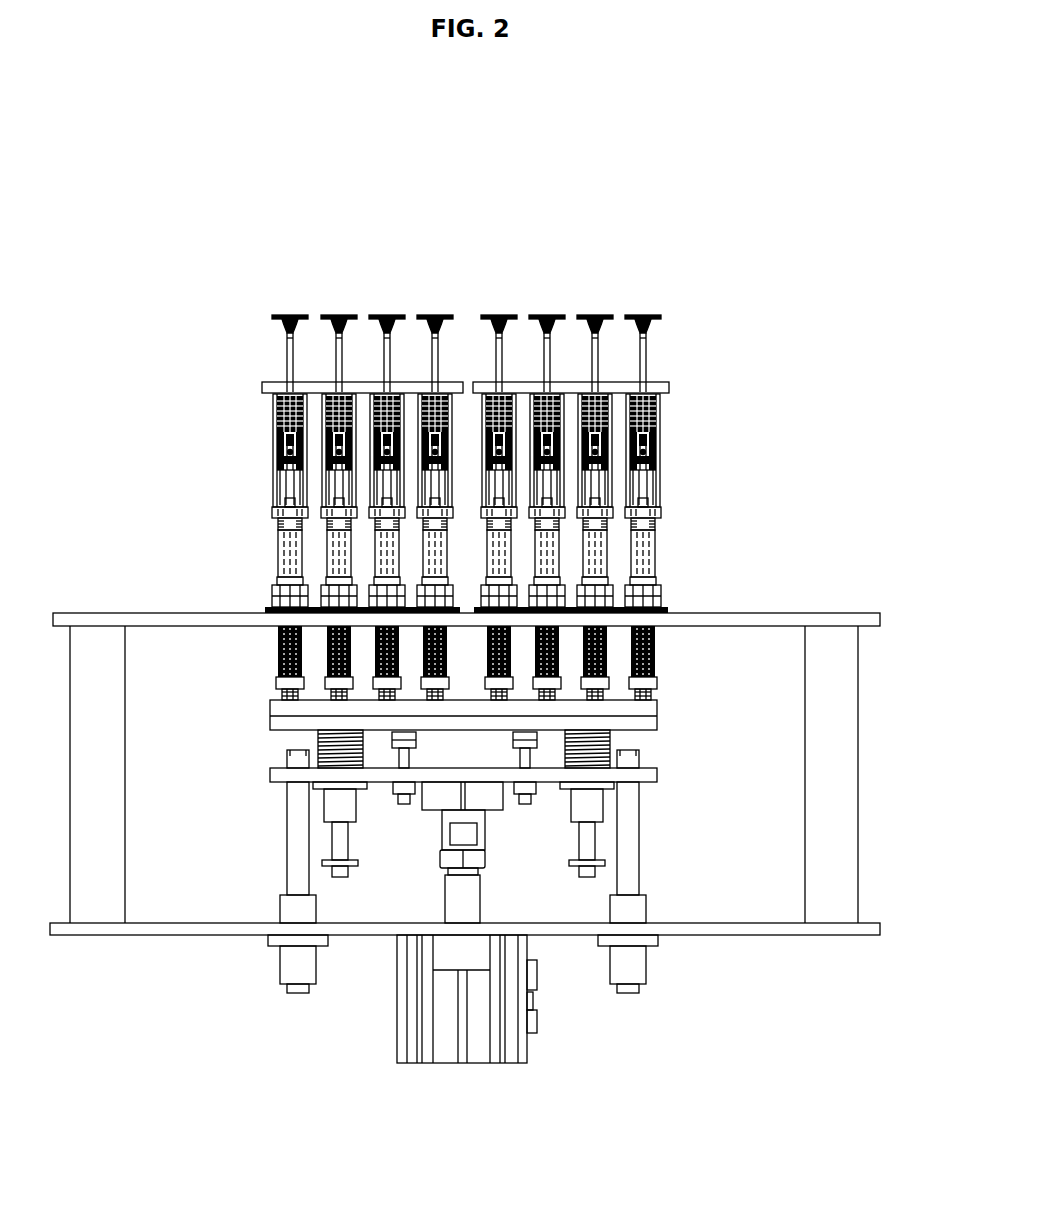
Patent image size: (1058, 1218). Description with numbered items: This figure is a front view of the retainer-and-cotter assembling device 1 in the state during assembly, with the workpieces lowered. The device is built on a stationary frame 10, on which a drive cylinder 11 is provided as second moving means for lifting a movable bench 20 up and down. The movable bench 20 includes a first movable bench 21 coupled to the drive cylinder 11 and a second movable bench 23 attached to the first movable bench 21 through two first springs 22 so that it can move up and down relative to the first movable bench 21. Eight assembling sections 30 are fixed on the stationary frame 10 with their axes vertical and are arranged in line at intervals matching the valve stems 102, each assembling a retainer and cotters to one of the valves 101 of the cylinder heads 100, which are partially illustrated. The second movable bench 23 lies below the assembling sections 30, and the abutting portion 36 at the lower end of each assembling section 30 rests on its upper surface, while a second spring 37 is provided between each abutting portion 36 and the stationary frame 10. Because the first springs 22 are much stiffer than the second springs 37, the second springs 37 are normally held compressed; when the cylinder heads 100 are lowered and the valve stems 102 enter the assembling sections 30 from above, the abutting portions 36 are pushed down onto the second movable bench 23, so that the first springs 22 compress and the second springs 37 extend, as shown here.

The retainer-and-cotter assembling device 1 is at (786, 446).
The stationary frame 10 is at (795, 612).
The drive cylinder 11 is at (397, 1015).
The movable bench 20 is at (520, 846).
The first movable bench 21 is at (658, 775).
The first springs 22 is at (364, 750).
The second movable bench 23 is at (658, 711).
The assembling sections 30 is at (416, 473).
The abutting portion 36 is at (426, 697).
The second springs 37 is at (422, 664).
The cylinder heads 100 is at (670, 386).
The valves 101 is at (291, 314).
The valve stems 102 is at (432, 366).